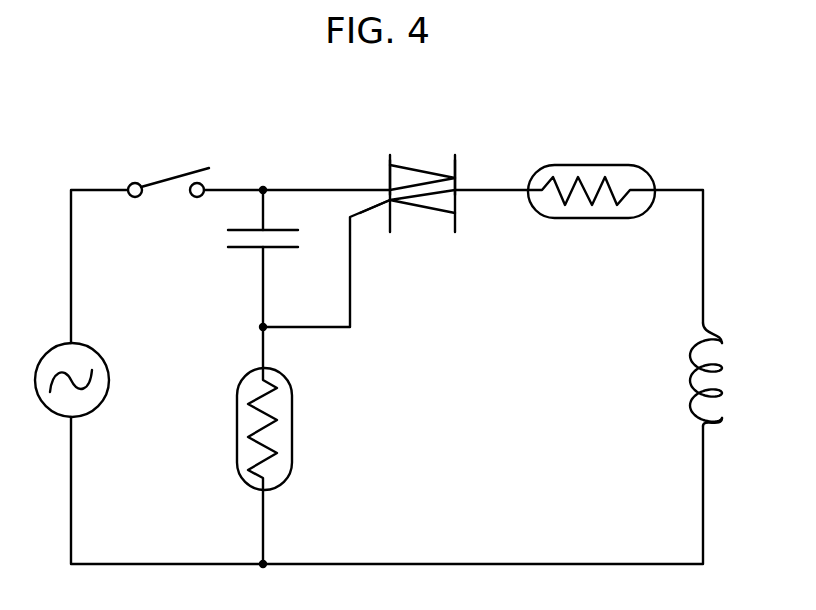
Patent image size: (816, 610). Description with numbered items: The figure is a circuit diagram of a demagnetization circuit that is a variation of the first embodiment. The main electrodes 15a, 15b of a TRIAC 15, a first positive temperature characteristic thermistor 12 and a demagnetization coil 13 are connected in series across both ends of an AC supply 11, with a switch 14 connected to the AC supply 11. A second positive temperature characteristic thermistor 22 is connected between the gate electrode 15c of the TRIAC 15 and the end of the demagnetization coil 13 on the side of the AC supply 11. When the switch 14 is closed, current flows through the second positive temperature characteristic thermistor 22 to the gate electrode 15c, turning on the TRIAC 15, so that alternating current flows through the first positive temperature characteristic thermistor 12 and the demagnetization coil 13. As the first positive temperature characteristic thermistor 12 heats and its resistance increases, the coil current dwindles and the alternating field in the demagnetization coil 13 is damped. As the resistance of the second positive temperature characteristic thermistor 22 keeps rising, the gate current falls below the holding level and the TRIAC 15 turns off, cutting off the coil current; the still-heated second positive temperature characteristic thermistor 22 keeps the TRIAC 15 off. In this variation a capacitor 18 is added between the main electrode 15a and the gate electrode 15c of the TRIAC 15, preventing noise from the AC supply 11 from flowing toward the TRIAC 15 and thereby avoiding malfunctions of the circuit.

The AC supply 11 is at (57, 346).
The first positive temperature characteristic thermistor 12 is at (606, 165).
The demagnetization coil 13 is at (720, 381).
The switch 14 is at (172, 171).
The TRIAC 15 is at (430, 146).
The main electrode 15a is at (387, 184).
The main electrode 15b is at (459, 185).
The gate electrode 15c is at (386, 210).
The capacitor 18 is at (228, 243).
The second positive temperature characteristic thermistor 22 is at (292, 442).